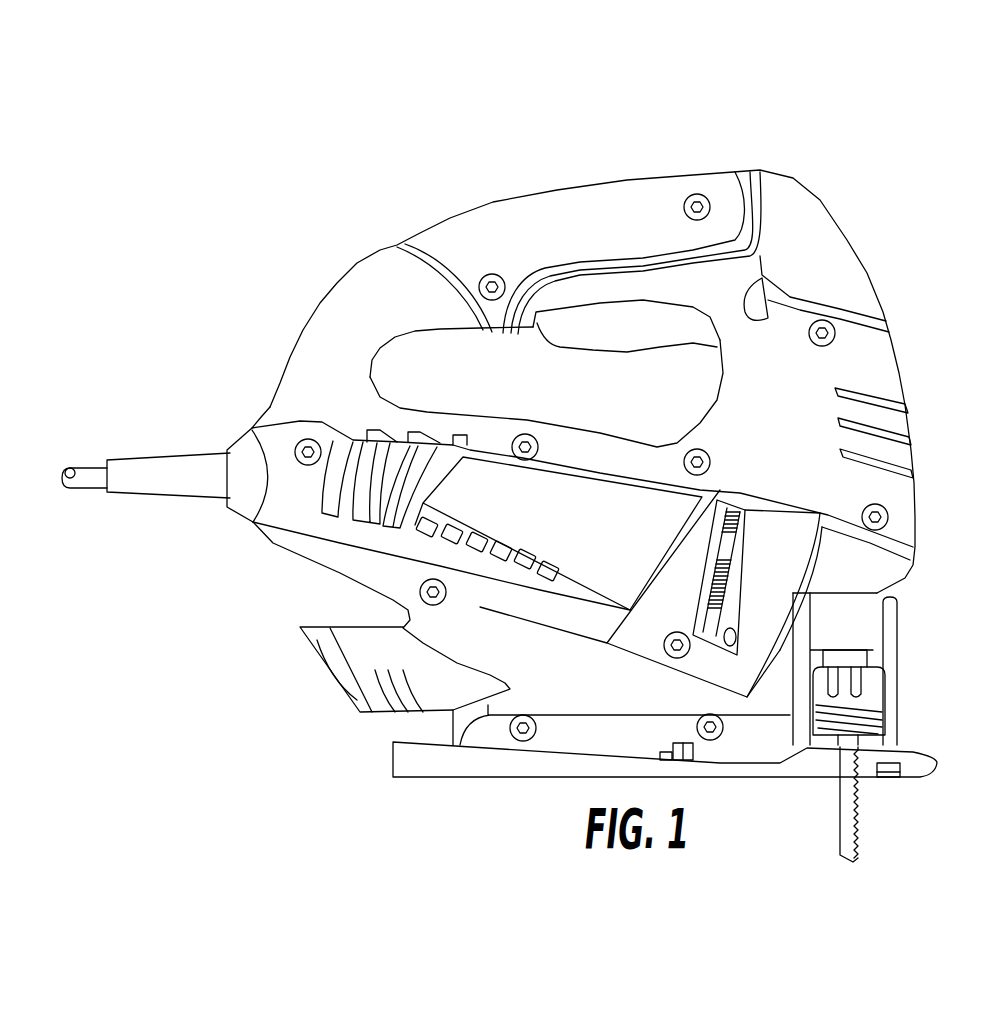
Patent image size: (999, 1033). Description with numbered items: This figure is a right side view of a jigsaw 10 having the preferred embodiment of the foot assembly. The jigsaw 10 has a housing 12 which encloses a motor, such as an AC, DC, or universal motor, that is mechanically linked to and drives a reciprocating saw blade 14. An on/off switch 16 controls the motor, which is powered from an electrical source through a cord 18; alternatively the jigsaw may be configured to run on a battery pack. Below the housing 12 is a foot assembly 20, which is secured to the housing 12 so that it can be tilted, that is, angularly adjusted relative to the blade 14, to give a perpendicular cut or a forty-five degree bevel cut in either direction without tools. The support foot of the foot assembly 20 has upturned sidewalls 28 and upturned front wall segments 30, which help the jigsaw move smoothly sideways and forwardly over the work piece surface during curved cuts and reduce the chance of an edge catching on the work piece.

The jigsaw 10 is at (862, 197).
The housing 12 is at (916, 517).
The saw blade 14 is at (848, 828).
The on/off switch 16 is at (602, 330).
The cord 18 is at (88, 476).
The foot assembly 20 is at (376, 752).
The upturned sidewalls 28 is at (823, 763).
The upturned front wall segments 30 is at (933, 767).